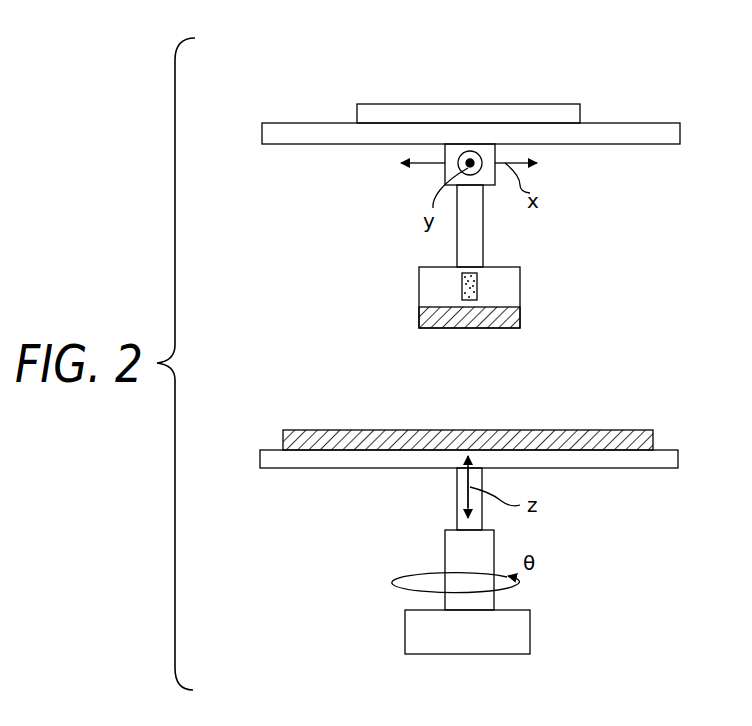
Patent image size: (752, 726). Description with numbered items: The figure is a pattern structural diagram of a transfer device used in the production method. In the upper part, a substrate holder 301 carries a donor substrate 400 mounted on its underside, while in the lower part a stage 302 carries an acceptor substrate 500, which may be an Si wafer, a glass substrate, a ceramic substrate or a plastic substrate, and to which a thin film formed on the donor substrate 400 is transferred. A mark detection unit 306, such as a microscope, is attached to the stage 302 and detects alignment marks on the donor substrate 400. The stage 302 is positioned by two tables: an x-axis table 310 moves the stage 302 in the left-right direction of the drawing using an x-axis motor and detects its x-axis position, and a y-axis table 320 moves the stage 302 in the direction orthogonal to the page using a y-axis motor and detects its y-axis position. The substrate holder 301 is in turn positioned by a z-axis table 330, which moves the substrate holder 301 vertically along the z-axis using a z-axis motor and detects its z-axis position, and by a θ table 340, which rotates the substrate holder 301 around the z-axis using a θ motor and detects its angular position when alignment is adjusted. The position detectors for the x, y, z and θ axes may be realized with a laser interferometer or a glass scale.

The substrate holder 301 is at (650, 468).
The stage 302 is at (520, 285).
The mark detection unit 306 is at (462, 287).
The x-axis table 310 is at (640, 145).
The y-axis table 320 is at (530, 104).
The z-axis table 330 is at (445, 540).
The θ table 340 is at (530, 632).
The donor substrate 400 is at (620, 430).
The acceptor substrate 500 is at (520, 317).